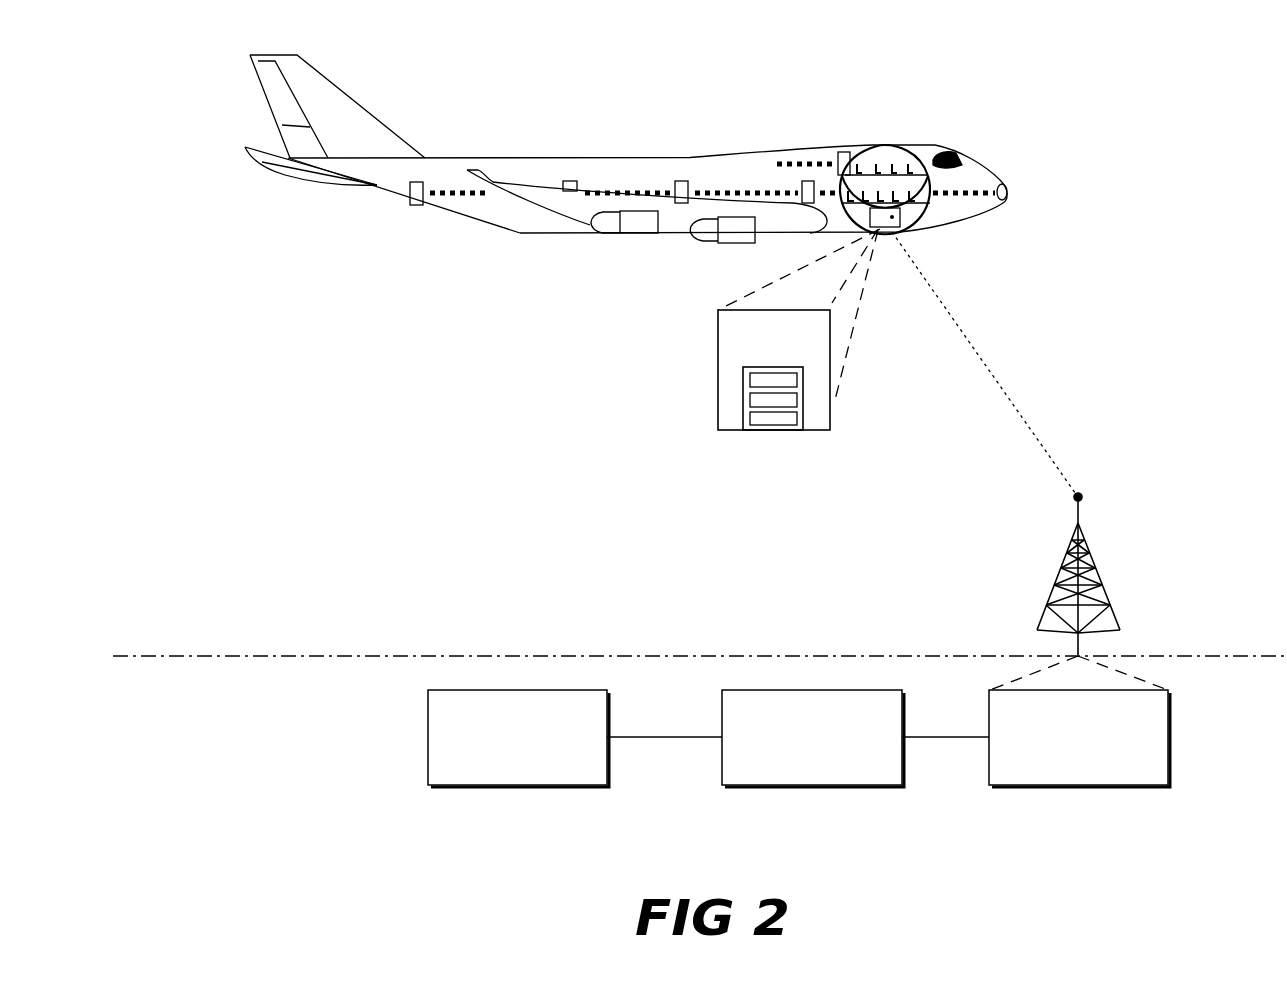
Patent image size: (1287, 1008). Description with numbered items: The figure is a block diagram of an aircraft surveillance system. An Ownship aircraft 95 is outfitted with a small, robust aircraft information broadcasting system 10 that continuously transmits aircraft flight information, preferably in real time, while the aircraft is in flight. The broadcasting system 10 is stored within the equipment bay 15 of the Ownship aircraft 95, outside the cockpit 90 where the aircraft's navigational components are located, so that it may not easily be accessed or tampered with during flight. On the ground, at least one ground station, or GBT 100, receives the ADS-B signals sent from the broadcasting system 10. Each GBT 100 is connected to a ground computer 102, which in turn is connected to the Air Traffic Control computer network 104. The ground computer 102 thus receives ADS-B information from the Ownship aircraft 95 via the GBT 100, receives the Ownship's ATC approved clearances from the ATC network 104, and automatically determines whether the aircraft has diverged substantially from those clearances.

The cockpit 90 is at (993, 172).
The Ownship aircraft 95 is at (953, 138).
The aircraft information broadcasting system 10 is at (752, 366).
The equipment bay 15 is at (718, 413).
The ground station (GBT) 100 is at (1078, 786).
The ground computer 102 is at (812, 786).
The Air Traffic Control (ATC) computer network 104 is at (520, 786).